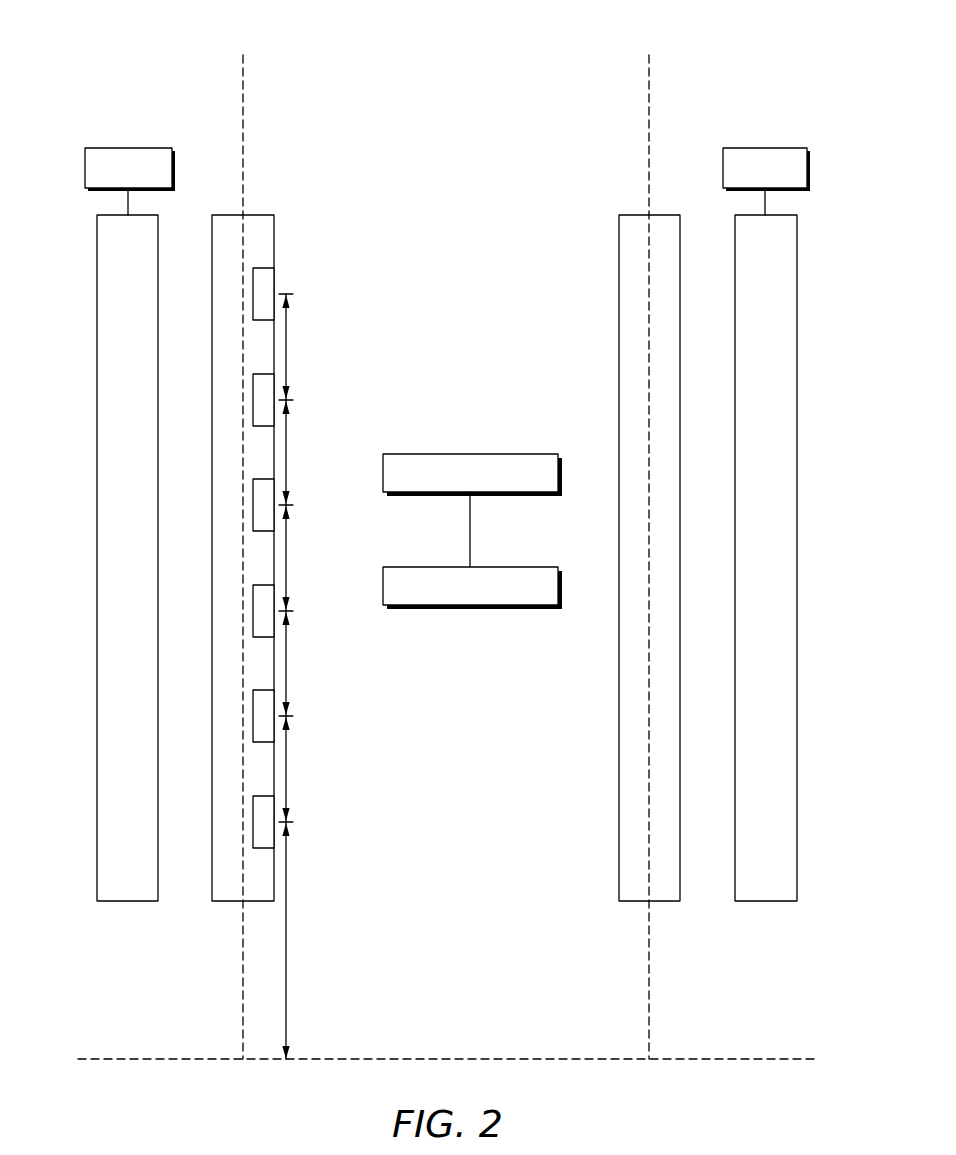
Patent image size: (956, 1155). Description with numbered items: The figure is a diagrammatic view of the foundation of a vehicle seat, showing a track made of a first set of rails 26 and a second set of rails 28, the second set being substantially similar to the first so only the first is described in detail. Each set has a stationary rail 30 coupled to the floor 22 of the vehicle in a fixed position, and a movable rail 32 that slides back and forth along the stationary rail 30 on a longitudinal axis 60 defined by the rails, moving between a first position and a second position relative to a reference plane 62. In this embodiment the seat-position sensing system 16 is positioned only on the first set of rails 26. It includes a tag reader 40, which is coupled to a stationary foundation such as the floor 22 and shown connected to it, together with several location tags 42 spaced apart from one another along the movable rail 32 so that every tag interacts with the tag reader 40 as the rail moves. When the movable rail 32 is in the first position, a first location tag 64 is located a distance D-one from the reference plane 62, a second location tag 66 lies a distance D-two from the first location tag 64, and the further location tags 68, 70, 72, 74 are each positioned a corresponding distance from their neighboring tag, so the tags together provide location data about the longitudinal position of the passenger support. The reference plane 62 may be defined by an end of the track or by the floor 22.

The seat-position sensing system 16 is at (104, 60).
The floor 22 is at (129, 148).
The first set of rails 26 is at (148, 126).
The second set of rails 28 is at (788, 108).
The stationary rail 30 is at (97, 433).
The movable rail 32 is at (260, 215).
The tag reader 40 is at (428, 567).
The location tags 42 is at (304, 284).
The longitudinal axis 60 is at (245, 127).
The reference plane 62 is at (483, 1059).
The first location tag 64 is at (253, 822).
The second location tag 66 is at (253, 716).
The location tag 68 is at (253, 611).
The location tag 70 is at (253, 505).
The location tag 72 is at (253, 400).
The location tag 74 is at (253, 294).